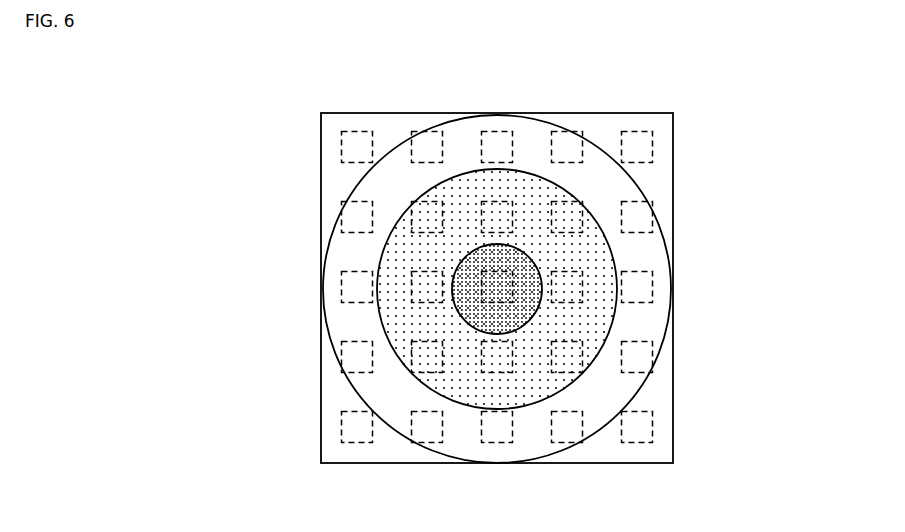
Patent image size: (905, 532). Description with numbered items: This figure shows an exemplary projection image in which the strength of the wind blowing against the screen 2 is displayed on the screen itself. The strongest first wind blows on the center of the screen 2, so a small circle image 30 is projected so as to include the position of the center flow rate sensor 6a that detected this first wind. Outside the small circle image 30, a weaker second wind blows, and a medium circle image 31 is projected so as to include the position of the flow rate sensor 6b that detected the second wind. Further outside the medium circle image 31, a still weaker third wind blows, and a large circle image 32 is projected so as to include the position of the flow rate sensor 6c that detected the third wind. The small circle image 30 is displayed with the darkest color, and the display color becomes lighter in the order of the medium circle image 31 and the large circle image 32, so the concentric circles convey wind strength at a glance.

The screen 2 is at (676, 148).
The small circle image 30 is at (527, 262).
The medium circle image 31 is at (521, 180).
The large circle image 32 is at (456, 132).
The center flow rate sensor 6a is at (508, 300).
The flow rate sensor 6b is at (487, 373).
The flow rate sensor 6c is at (636, 375).